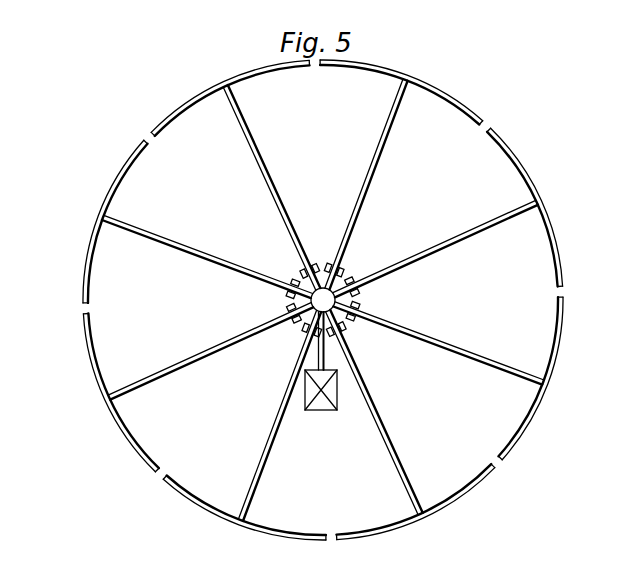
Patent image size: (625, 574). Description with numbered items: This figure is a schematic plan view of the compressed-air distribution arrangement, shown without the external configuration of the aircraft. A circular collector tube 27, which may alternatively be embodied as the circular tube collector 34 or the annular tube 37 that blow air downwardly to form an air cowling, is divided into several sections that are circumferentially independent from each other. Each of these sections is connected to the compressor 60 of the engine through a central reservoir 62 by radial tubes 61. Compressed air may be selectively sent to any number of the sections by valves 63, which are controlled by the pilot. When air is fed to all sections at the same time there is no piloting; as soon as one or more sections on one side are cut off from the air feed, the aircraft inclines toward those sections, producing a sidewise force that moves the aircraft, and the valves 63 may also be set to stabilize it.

The circular collector tube 27 is at (100, 224).
The circular tube collector 34 is at (292, 300).
The annular tube 37 is at (292, 300).
The compressor 60 is at (320, 411).
The tubes 61 is at (205, 249).
The reservoir 62 is at (326, 300).
The valves 63 is at (288, 293).